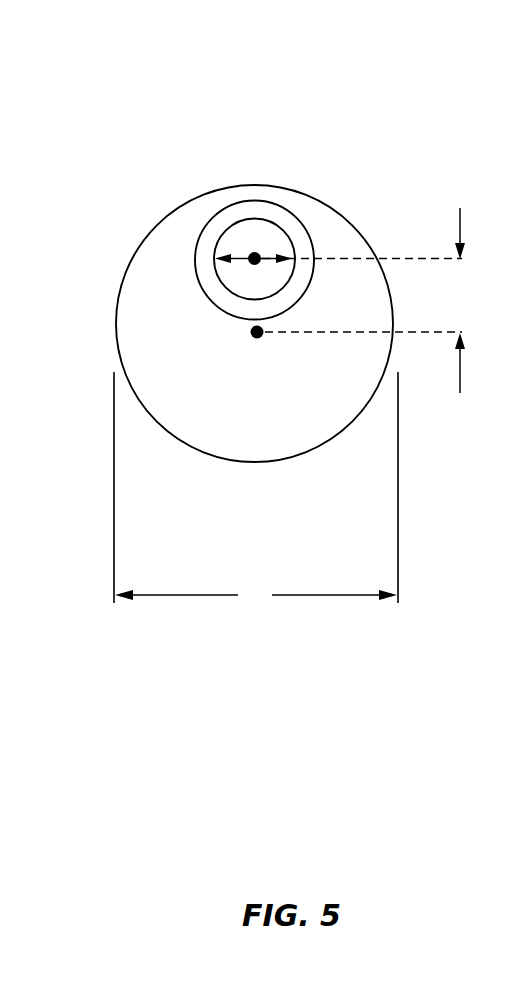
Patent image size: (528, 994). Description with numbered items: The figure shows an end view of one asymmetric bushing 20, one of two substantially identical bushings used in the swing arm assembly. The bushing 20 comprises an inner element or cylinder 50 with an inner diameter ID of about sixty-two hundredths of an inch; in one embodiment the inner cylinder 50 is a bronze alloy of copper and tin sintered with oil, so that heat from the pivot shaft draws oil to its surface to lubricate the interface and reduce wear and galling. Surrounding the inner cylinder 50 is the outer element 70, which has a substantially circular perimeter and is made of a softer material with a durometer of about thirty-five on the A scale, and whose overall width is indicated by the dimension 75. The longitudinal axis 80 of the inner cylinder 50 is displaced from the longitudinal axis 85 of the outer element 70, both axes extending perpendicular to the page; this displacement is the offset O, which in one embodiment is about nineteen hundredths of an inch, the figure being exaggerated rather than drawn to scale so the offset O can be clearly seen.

The asymmetric bushing 20 is at (161, 92).
The inner cylinder 50 is at (210, 238).
The outer element 70 is at (270, 416).
The body width 75 is at (256, 489).
The longitudinal axis of the inner cylinder 80 is at (258, 251).
The longitudinal axis of the outer element 85 is at (250, 329).
The inner diameter ID is at (240, 254).
The offset O is at (460, 300).